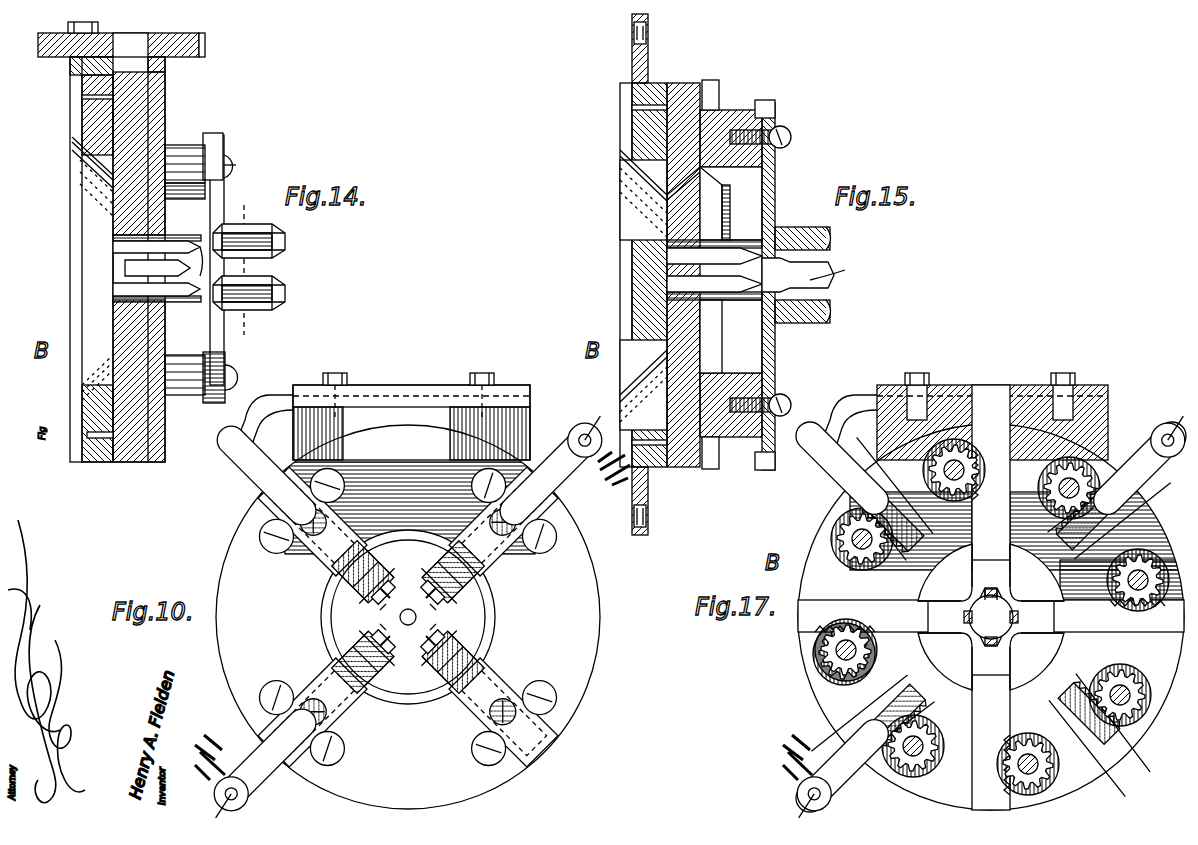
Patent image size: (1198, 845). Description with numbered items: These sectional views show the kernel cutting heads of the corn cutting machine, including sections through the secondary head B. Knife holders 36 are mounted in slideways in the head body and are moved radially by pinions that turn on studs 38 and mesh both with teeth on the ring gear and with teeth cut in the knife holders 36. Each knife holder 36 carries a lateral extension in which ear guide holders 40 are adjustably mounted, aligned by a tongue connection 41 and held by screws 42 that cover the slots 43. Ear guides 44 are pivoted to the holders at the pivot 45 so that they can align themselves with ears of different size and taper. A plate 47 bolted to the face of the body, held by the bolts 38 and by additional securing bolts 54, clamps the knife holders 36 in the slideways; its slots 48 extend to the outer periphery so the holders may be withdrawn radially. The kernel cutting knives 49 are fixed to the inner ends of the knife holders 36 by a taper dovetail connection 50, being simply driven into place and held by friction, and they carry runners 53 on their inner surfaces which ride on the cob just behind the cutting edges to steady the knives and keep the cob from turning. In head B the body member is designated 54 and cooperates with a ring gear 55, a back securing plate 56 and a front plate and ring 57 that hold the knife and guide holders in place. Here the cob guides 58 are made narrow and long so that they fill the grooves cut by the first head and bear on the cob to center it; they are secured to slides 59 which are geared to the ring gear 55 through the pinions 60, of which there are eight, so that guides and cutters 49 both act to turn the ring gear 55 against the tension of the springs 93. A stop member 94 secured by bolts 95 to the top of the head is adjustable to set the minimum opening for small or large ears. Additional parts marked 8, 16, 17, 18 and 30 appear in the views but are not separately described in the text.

In FIG. 10, the pivot pin 8 is at (590, 445).
In FIG. 17, the pivot pin 8 is at (990, 616).
In FIG. 14, the arm 16 is at (210, 268).
In FIG. 14, the plate 17 is at (148, 33).
In FIG. 14, the plate 18 is at (113, 33).
In FIG. 14, the flange cap 30 is at (205, 45).
In FIG. 17, the knife holders 36 is at (991, 597).
In FIG. 10, the studs 38 is at (485, 470).
In FIG. 17, the studs 38 is at (835, 648).
In FIG. 15, the ear guide holders 40 is at (775, 182).
In FIG. 10, the ear guide holders 40 is at (315, 580).
In FIG. 15, the tongue connection 41 is at (762, 100).
In FIG. 10, the tongue connection 41 is at (415, 725).
In FIG. 15, the screws 42 is at (782, 128).
In FIG. 10, the screws 42 is at (500, 520).
In FIG. 15, the slots 43 is at (785, 147).
In FIG. 10, the ear guides 44 is at (425, 622).
In FIG. 10, the pivot 45 is at (398, 580).
In FIG. 10, the plate 47 is at (408, 617).
In FIG. 10, the slots 48 is at (270, 490).
In FIG. 14, the kernel cutting knives 49 is at (192, 296).
In FIG. 15, the kernel cutting knives 49 is at (762, 228).
In FIG. 17, the kernel cutting knives 49 is at (980, 598).
In FIG. 17, the taper dovetail connection 50 is at (1010, 598).
In FIG. 14, the runners 53 is at (160, 278).
In FIG. 15, the runners 53 is at (700, 290).
In FIG. 10, the runners 53 is at (410, 619).
In FIG. 17, the runners 53 is at (980, 636).
In FIG. 14, the securing bolts 54 is at (92, 120).
In FIG. 15, the securing bolts 54 is at (645, 128).
In FIG. 10, the securing bolts 54 is at (282, 540).
In FIG. 17, the securing bolts 54 is at (1161, 654).
In FIG. 14, the ring gear 55 is at (78, 84).
In FIG. 15, the ring gear 55 is at (626, 96).
In FIG. 14, the back securing plate 56 is at (72, 150).
In FIG. 15, the back securing plate 56 is at (622, 150).
In FIG. 15, the front plate and ring 57 is at (745, 225).
In FIG. 14, the cob guides 58 is at (285, 240).
In FIG. 15, the cob guides 58 is at (816, 275).
In FIG. 15, the slides 59 is at (718, 80).
In FIG. 17, the slides 59 is at (1128, 510).
In FIG. 17, the pinions 60 is at (935, 475).
In FIG. 10, the springs 93 is at (640, 475).
In FIG. 17, the springs 93 is at (785, 748).
In FIG. 10, the stop member 94 is at (276, 393).
In FIG. 17, the stop member 94 is at (852, 392).
In FIG. 10, the bolts 95 is at (470, 376).
In FIG. 17, the bolts 95 is at (1055, 374).